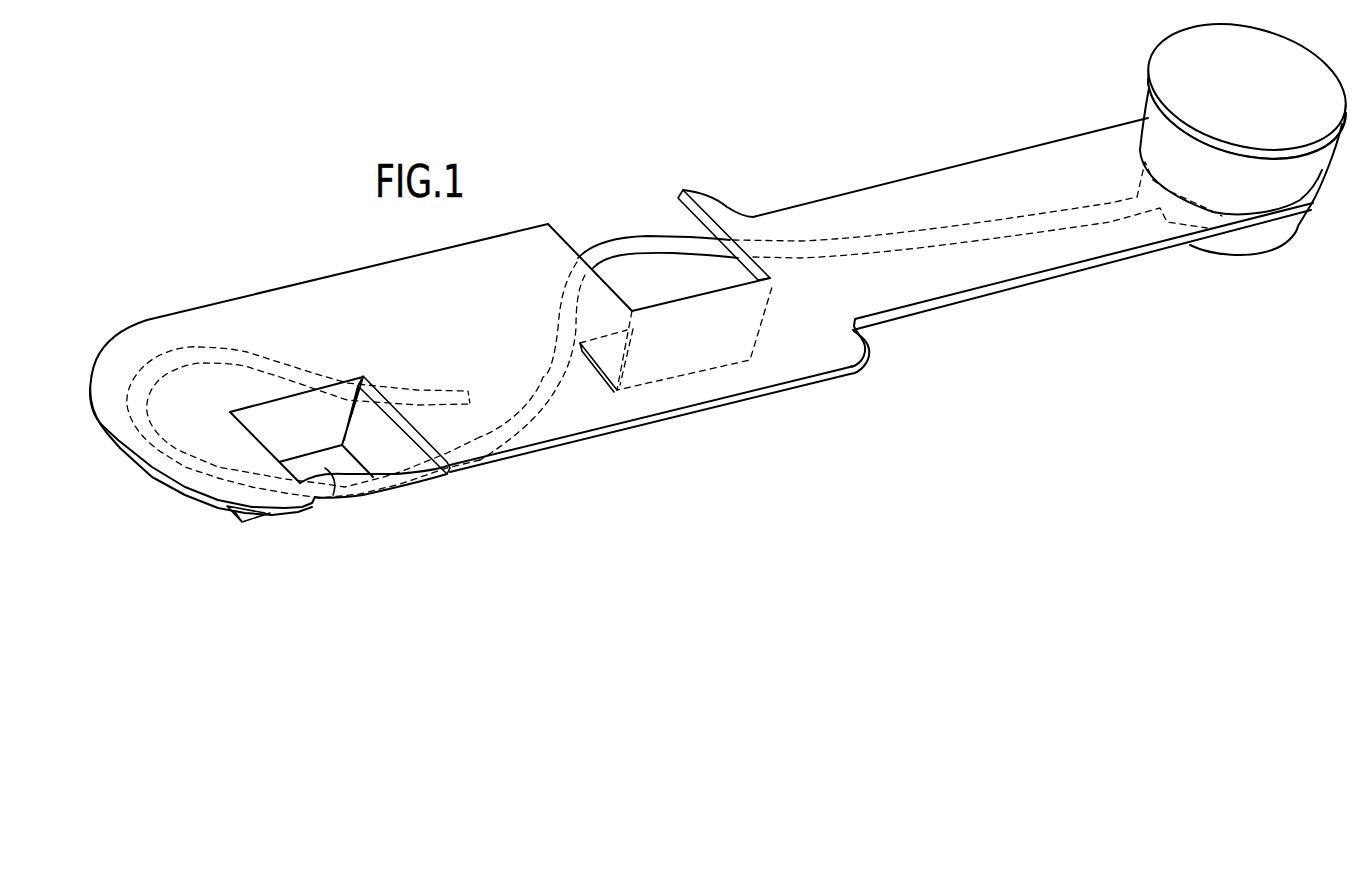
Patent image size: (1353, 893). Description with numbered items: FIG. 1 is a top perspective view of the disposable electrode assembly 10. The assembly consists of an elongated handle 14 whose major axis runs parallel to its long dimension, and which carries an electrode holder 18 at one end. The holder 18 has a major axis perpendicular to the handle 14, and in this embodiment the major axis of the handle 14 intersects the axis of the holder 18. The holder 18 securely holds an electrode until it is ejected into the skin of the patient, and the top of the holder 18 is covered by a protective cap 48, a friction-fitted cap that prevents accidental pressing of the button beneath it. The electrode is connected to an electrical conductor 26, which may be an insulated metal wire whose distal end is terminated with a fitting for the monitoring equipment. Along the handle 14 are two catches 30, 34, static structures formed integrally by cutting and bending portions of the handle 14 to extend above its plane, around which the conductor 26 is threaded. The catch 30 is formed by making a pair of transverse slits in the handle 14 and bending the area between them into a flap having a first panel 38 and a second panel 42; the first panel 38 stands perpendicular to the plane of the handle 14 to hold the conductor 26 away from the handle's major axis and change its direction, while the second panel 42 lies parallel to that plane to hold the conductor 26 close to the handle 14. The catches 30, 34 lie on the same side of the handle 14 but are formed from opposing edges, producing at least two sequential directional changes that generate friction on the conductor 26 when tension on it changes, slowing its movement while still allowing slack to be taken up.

The disposable electrode assembly 10 is at (815, 146).
The handle 14 is at (823, 333).
The electrode holder 18 is at (1243, 242).
The electrical conductor 26 is at (403, 483).
The catch 30 is at (236, 522).
The catch 34 is at (692, 339).
The first panel 38 is at (308, 435).
The second panel 42 is at (333, 495).
The protective cap 48 is at (1268, 98).